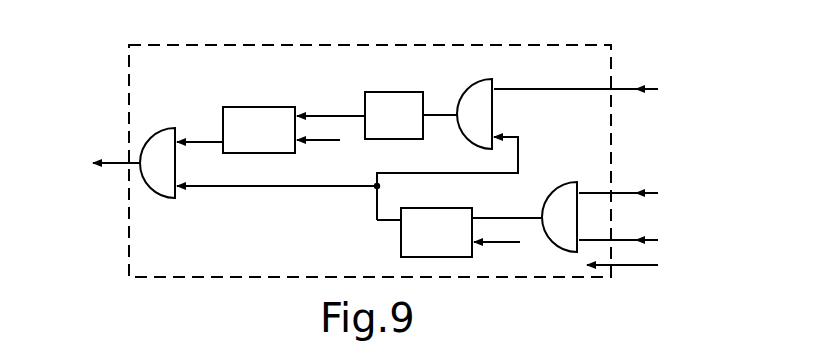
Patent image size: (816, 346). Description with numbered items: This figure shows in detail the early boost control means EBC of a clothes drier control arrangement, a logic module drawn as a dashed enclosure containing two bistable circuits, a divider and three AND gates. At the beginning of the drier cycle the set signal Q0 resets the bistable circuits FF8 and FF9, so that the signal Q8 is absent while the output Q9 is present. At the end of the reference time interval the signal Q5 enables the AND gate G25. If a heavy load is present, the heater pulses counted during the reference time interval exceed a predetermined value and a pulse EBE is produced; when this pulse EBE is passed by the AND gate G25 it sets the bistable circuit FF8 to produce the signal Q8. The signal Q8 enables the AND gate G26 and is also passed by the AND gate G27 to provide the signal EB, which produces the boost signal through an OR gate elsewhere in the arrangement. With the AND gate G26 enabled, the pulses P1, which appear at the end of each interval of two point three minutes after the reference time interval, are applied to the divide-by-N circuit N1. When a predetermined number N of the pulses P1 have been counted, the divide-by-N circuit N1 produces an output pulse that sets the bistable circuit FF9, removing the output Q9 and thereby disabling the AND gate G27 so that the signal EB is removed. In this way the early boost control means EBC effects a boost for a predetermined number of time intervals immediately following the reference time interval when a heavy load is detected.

The early boost control means EBC is at (128, 137).
The AND gate G27 is at (161, 178).
The AND gate G26 is at (483, 98).
The AND gate G25 is at (569, 201).
The bistable circuit FF9 is at (294, 130).
The bistable circuit FF8 is at (471, 232).
The divide-by-N circuit N1 is at (411, 100).
The signal EB is at (96, 165).
The pulse EBE is at (645, 194).
The pulses P1 is at (593, 90).
The signal Q8 is at (290, 212).
The output Q9 is at (200, 140).
The signal Q5 is at (639, 241).
The set signal Q0 is at (322, 146).